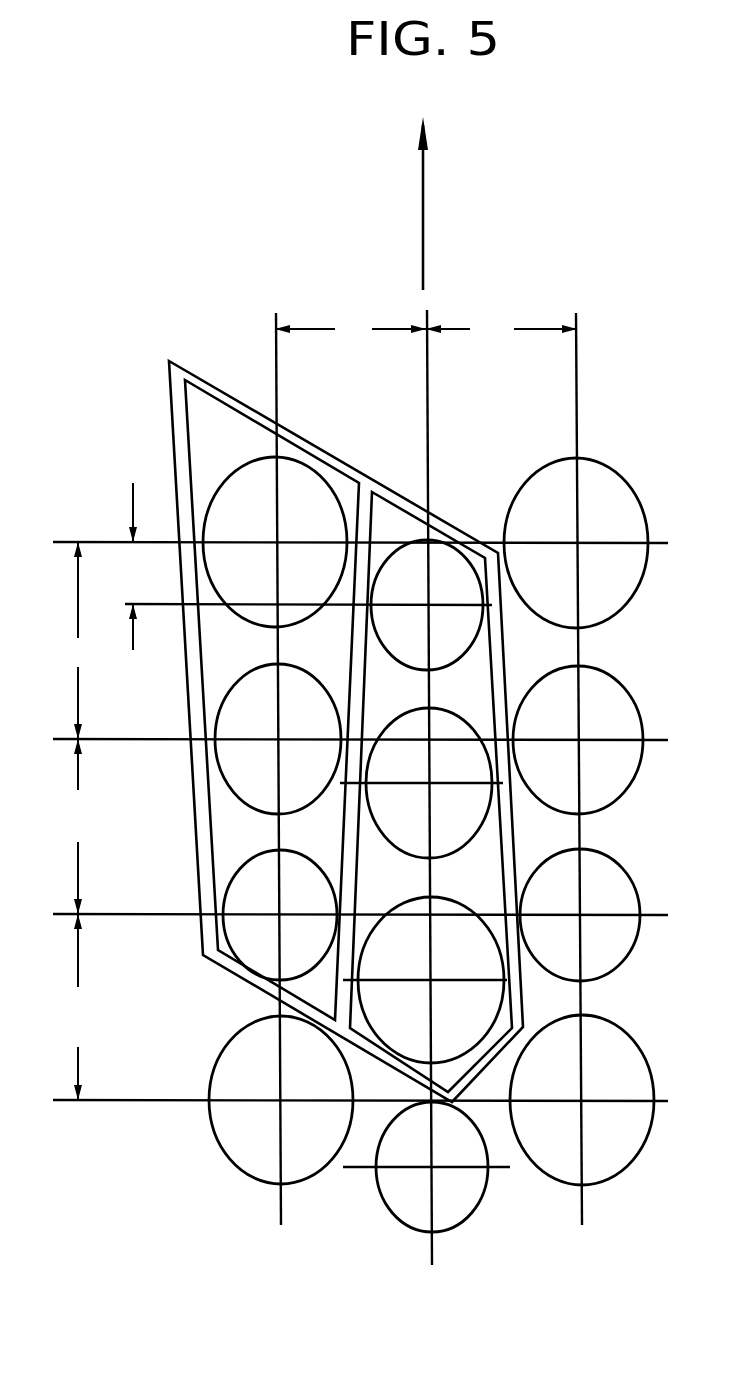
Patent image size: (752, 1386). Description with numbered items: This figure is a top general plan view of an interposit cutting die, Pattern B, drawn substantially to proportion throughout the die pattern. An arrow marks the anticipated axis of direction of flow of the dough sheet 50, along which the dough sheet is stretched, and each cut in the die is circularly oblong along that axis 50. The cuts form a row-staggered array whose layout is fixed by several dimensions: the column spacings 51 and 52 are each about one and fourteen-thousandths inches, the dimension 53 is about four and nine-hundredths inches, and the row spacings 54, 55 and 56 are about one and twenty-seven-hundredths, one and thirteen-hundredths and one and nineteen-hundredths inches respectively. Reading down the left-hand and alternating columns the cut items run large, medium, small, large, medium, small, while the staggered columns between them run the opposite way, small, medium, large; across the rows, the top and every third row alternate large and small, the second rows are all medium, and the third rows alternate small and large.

The axis of direction of flow of the dough sheet 50 is at (423, 199).
The die pattern dimension 51 is at (350, 330).
The die pattern dimension 52 is at (501, 330).
The die pattern dimension 53 is at (133, 483).
The die pattern dimension 54 is at (81, 640).
The die pattern dimension 55 is at (81, 826).
The die pattern dimension 56 is at (81, 1007).